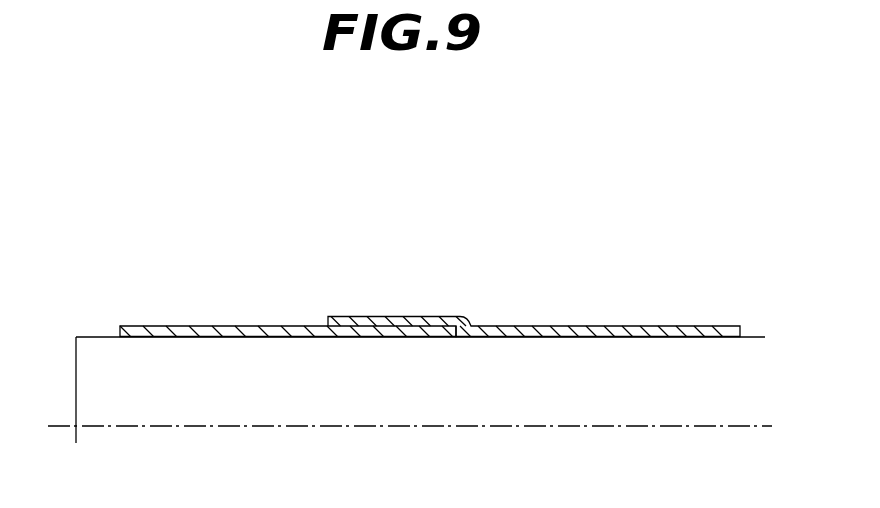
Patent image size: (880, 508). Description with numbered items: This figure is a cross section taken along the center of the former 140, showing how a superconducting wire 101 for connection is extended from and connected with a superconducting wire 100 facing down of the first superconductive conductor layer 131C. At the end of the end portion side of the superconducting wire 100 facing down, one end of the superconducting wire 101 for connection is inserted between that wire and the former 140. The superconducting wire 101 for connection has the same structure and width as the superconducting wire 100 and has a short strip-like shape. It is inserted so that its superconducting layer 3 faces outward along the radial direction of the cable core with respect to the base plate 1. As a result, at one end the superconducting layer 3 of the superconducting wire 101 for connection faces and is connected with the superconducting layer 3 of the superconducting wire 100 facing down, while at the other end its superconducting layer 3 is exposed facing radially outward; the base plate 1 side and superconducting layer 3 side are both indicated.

The former 140 is at (98, 335).
The superconducting wire for connection 101 is at (160, 327).
The superconducting wire 100 is at (668, 327).
The superconducting layer 3 is at (225, 335).
The base plate 1 is at (225, 337).
The first superconductive conductor layer 131C is at (433, 214).